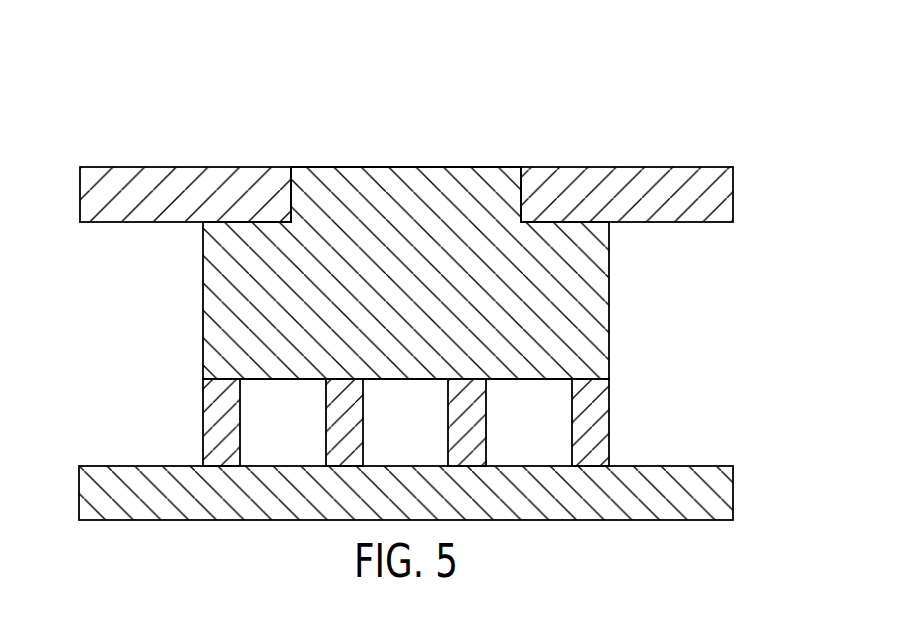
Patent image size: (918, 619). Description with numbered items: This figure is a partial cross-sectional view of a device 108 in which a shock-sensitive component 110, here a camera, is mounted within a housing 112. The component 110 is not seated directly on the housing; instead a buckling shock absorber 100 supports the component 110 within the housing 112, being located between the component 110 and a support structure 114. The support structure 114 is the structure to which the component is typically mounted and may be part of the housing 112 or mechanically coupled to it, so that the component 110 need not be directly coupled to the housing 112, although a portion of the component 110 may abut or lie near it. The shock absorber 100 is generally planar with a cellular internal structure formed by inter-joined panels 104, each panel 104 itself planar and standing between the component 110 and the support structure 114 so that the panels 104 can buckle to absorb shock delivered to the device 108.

The shock absorber 100 is at (430, 294).
The panels 104 is at (222, 434).
The device 108 is at (212, 138).
The component 110 is at (420, 303).
The housing 112 is at (633, 182).
The support structure 114 is at (717, 505).